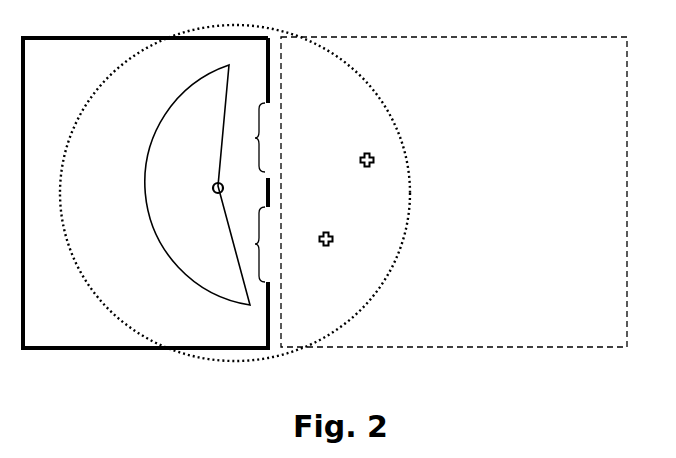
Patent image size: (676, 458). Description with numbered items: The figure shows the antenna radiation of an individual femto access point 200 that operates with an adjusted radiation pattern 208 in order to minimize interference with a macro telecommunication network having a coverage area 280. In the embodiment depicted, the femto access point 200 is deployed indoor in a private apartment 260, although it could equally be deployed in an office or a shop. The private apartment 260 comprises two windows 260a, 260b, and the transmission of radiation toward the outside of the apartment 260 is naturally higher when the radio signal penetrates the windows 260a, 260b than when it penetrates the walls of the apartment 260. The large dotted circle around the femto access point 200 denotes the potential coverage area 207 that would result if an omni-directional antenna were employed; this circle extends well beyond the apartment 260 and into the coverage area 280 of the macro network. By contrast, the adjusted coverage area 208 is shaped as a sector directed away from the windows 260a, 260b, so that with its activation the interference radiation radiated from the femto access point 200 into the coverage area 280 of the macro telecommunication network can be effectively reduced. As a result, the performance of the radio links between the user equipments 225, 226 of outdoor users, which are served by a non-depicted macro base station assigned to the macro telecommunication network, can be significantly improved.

The femto access point 200 is at (213, 196).
The potential coverage area 207 is at (222, 363).
The adjusted radiation pattern 208 is at (178, 306).
The user equipment 225 is at (366, 168).
The user equipment 226 is at (325, 247).
The private apartment 260 is at (52, 349).
The window 260a is at (246, 137).
The window 260b is at (249, 244).
The coverage area 280 is at (551, 348).